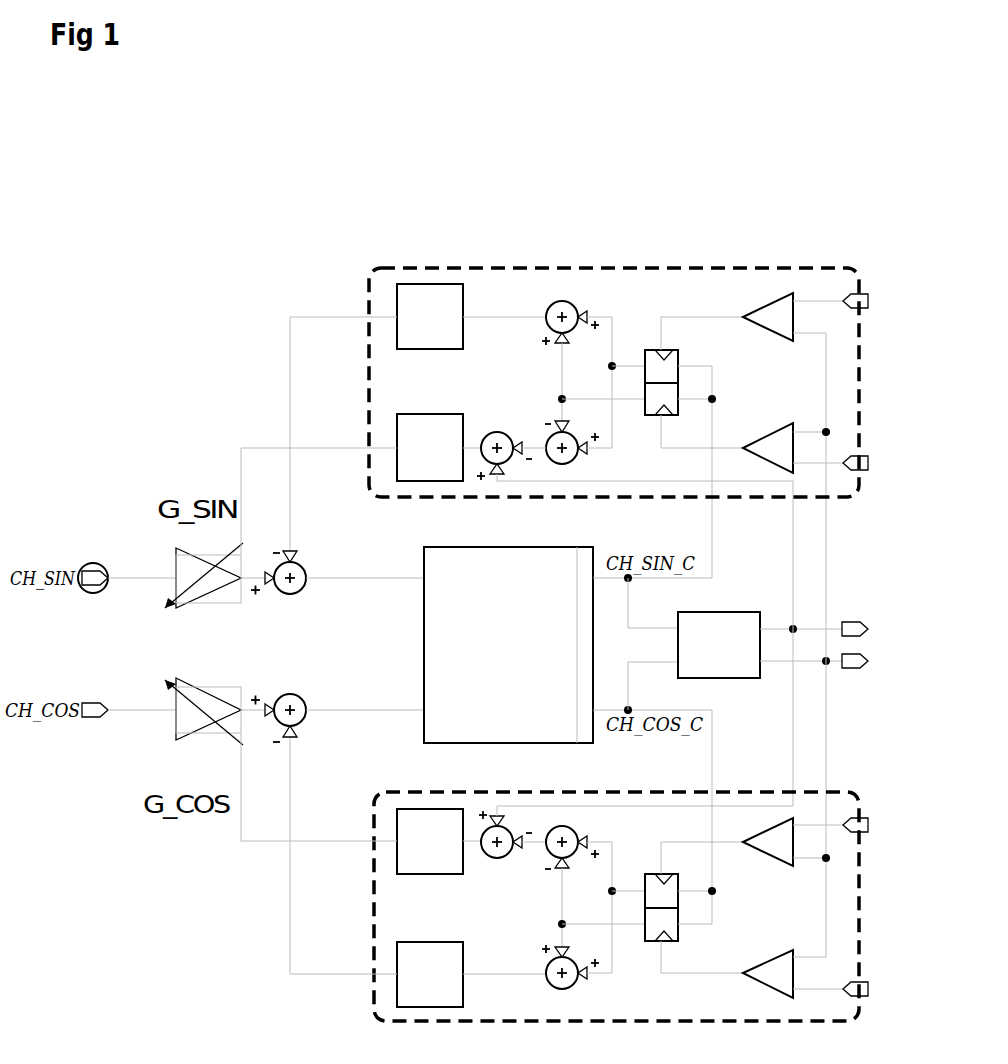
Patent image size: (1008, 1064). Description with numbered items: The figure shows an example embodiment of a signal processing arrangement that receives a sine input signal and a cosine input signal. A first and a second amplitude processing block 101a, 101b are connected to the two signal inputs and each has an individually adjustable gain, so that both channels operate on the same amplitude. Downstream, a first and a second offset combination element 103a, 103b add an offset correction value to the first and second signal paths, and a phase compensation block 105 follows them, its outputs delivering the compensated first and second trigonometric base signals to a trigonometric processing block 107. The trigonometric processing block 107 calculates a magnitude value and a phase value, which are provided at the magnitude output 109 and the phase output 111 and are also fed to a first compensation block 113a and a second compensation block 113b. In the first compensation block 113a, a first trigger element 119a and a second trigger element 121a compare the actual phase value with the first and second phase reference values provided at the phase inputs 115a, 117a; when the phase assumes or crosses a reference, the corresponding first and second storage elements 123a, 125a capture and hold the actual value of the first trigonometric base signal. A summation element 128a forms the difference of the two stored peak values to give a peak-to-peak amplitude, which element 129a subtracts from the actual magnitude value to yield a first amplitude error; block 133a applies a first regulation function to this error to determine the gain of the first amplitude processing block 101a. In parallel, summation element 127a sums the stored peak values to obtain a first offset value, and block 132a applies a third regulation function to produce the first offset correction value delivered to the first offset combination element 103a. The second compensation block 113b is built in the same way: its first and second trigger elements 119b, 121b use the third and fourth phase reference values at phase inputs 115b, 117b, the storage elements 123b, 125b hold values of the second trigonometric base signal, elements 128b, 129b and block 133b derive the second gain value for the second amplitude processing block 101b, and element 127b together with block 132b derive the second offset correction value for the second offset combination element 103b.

The first amplitude processing block 101a is at (204, 588).
The second amplitude processing block 101b is at (204, 723).
The first offset combination element 103a is at (286, 592).
The second offset combination element 103b is at (286, 704).
The phase compensation block 105 is at (486, 645).
The trigonometric processing block 107 is at (696, 645).
The magnitude output 109 is at (839, 614).
The phase output 111 is at (835, 675).
The first compensation block 113a is at (614, 366).
The second compensation block 113b is at (616, 924).
The phase input 115a is at (883, 318).
The phase input 117a is at (883, 449).
The phase input 115b is at (884, 839).
The phase input 117b is at (884, 973).
The first trigger element 119a is at (778, 335).
The second trigger element 121a is at (778, 435).
The first trigger element 119b is at (775, 858).
The second trigger element 121b is at (774, 960).
The first storage element 123a is at (690, 359).
The second storage element 125a is at (690, 414).
The first storage element 123b is at (691, 882).
The second storage element 125b is at (688, 938).
The summation element 127a is at (567, 308).
The summation element 128a is at (592, 450).
The subtraction element 129a is at (502, 443).
The summation element 127b is at (569, 981).
The summation element 128b is at (590, 838).
The subtraction element 129b is at (502, 852).
The regulation block 132a is at (430, 331).
The regulation block 133a is at (430, 434).
The regulation block 132b is at (430, 960).
The regulation block 133b is at (430, 856).